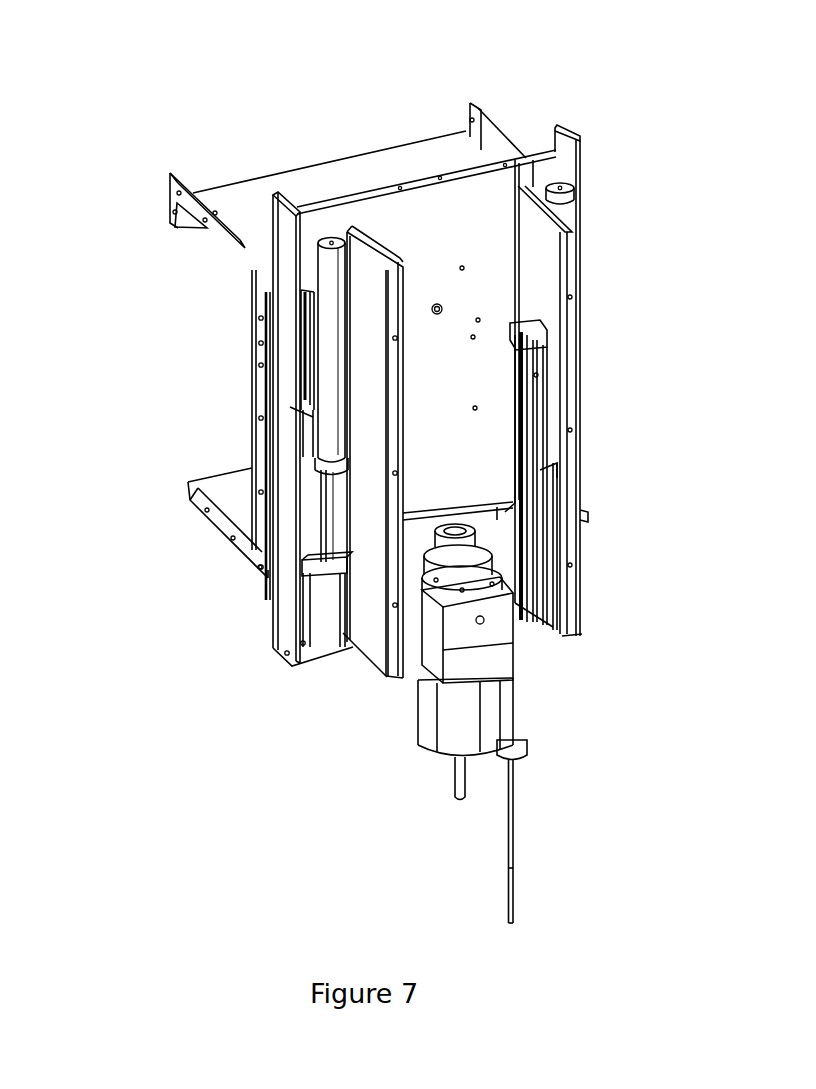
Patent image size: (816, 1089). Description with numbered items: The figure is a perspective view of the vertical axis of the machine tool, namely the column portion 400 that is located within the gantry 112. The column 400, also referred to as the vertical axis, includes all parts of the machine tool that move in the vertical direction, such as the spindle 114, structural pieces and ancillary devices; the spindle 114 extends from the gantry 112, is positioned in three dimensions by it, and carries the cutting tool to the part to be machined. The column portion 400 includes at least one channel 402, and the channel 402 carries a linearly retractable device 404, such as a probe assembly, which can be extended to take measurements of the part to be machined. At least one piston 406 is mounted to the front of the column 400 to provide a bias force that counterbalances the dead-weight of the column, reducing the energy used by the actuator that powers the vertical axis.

The gantry 112 is at (632, 102).
The column portion 400 is at (430, 215).
The channel 402 is at (553, 510).
The linearly retractable device 404 is at (513, 840).
The piston 406 is at (330, 372).
The spindle 114 is at (430, 738).